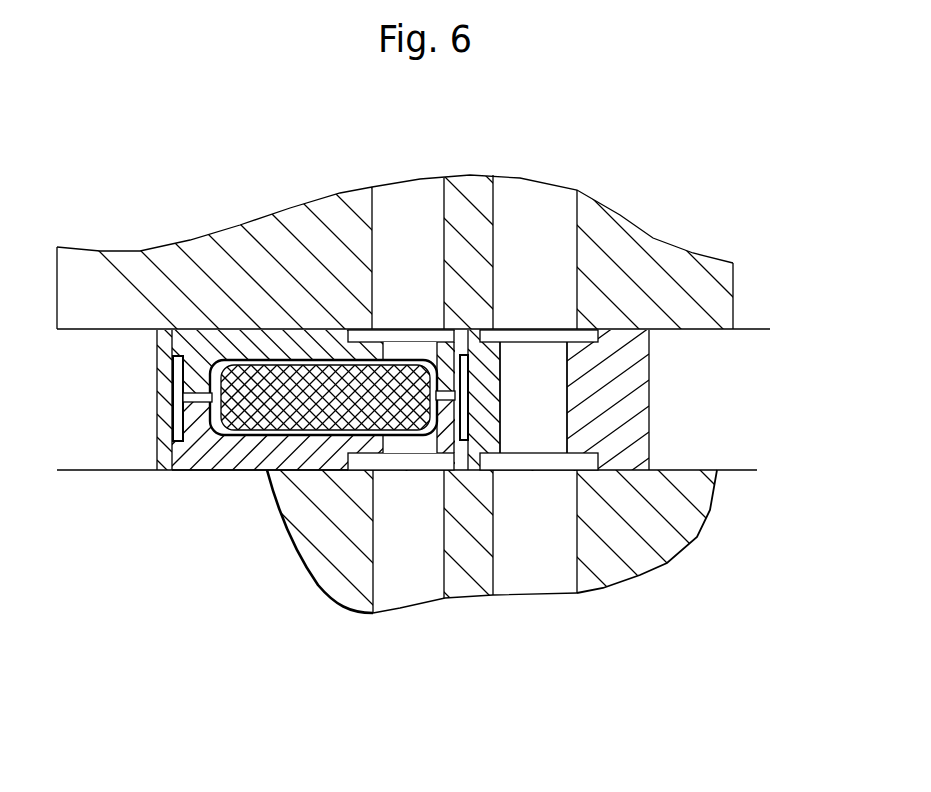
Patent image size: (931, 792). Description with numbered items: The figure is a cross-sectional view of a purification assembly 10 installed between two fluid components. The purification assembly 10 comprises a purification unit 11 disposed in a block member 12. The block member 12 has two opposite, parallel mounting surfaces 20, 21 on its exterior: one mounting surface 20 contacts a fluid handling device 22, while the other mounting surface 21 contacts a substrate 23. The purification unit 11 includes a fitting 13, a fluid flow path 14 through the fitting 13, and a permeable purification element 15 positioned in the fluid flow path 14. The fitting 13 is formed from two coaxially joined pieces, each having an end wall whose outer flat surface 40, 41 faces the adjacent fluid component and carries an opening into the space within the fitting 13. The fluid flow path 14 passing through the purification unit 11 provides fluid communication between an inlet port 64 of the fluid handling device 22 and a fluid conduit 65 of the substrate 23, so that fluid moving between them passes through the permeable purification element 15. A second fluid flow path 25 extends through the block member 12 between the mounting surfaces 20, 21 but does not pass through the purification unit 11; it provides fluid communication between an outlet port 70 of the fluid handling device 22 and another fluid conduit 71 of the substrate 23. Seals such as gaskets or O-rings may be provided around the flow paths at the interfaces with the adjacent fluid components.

The purification assembly 10 is at (157, 403).
The purification unit 11 is at (203, 457).
The block member 12 is at (617, 387).
The fitting 13 is at (247, 452).
The fluid flow path 14 is at (257, 470).
The permeable purification element 15 is at (238, 390).
The mounting surface 20 is at (457, 213).
The mounting surface 21 is at (618, 470).
The fluid handling device 22 is at (220, 268).
The substrate 23 is at (474, 590).
The fluid flow path 25 is at (545, 426).
The flat surface 40 is at (287, 327).
The flat surface 41 is at (398, 442).
The inlet port 64 is at (427, 205).
The fluid conduit 65 is at (392, 555).
The outlet port 70 is at (555, 202).
The fluid conduit 71 is at (550, 562).